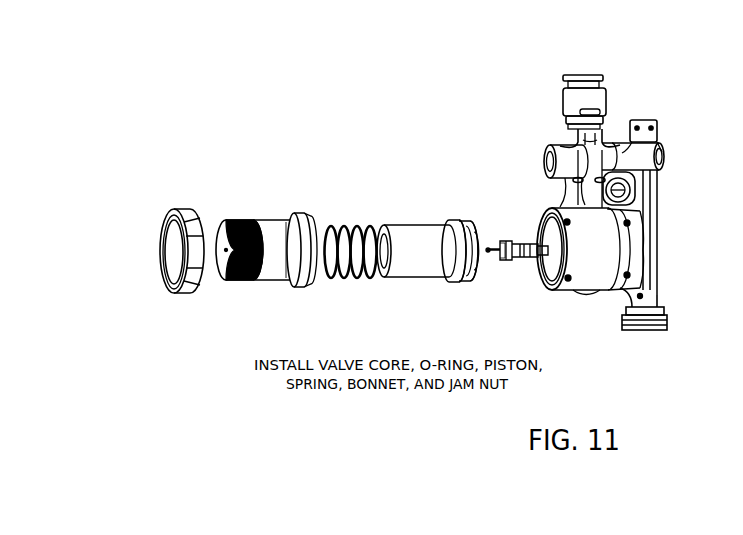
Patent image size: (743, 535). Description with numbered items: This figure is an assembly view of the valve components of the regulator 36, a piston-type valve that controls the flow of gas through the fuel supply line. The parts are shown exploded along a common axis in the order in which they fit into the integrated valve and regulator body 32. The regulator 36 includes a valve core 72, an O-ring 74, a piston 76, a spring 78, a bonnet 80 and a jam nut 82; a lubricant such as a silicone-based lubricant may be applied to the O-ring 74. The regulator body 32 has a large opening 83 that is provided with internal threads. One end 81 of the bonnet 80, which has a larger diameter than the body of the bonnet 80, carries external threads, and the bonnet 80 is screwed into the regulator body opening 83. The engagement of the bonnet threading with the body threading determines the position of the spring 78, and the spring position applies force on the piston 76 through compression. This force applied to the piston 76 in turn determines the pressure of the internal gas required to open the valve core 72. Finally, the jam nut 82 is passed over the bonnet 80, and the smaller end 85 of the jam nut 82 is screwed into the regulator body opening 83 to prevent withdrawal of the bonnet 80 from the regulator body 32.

The integrated valve and regulator body 32 is at (555, 208).
The regulator 36 is at (461, 178).
The valve core 72 is at (527, 260).
The O-ring 74 is at (470, 220).
The piston 76 is at (437, 261).
The spring 78 is at (370, 267).
The bonnet 80 is at (277, 261).
The end of the bonnet 81 is at (307, 228).
The jam nut 82 is at (172, 257).
The large opening of the regulator body 83 is at (545, 291).
The smaller end of the jam nut 85 is at (199, 215).